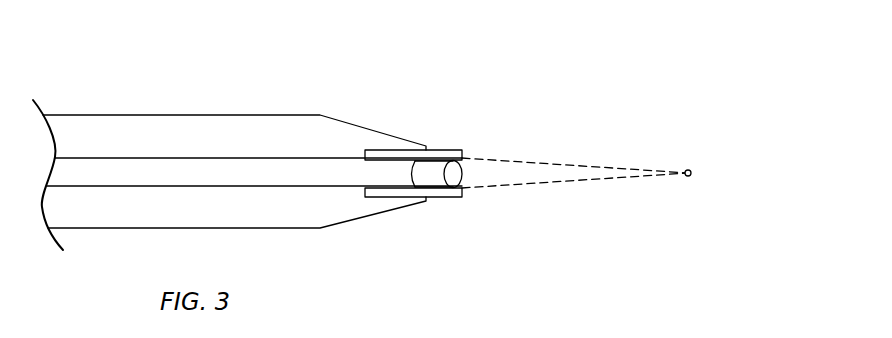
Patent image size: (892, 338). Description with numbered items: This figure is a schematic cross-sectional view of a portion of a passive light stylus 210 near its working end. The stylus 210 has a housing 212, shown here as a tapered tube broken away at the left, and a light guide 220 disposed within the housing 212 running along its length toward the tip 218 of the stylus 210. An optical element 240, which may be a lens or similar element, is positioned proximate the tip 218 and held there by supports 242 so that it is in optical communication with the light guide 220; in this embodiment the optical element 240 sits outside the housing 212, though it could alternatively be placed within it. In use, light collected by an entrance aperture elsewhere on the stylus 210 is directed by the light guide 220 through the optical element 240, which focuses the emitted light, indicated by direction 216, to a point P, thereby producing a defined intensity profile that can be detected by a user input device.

The stylus 210 is at (390, 72).
The housing 212 is at (153, 130).
The viewing direction 216 is at (496, 173).
The tip 218 is at (419, 238).
The light guide 220 is at (267, 178).
The optical element 240 is at (458, 178).
The supports 242 is at (433, 193).
The point P is at (689, 169).